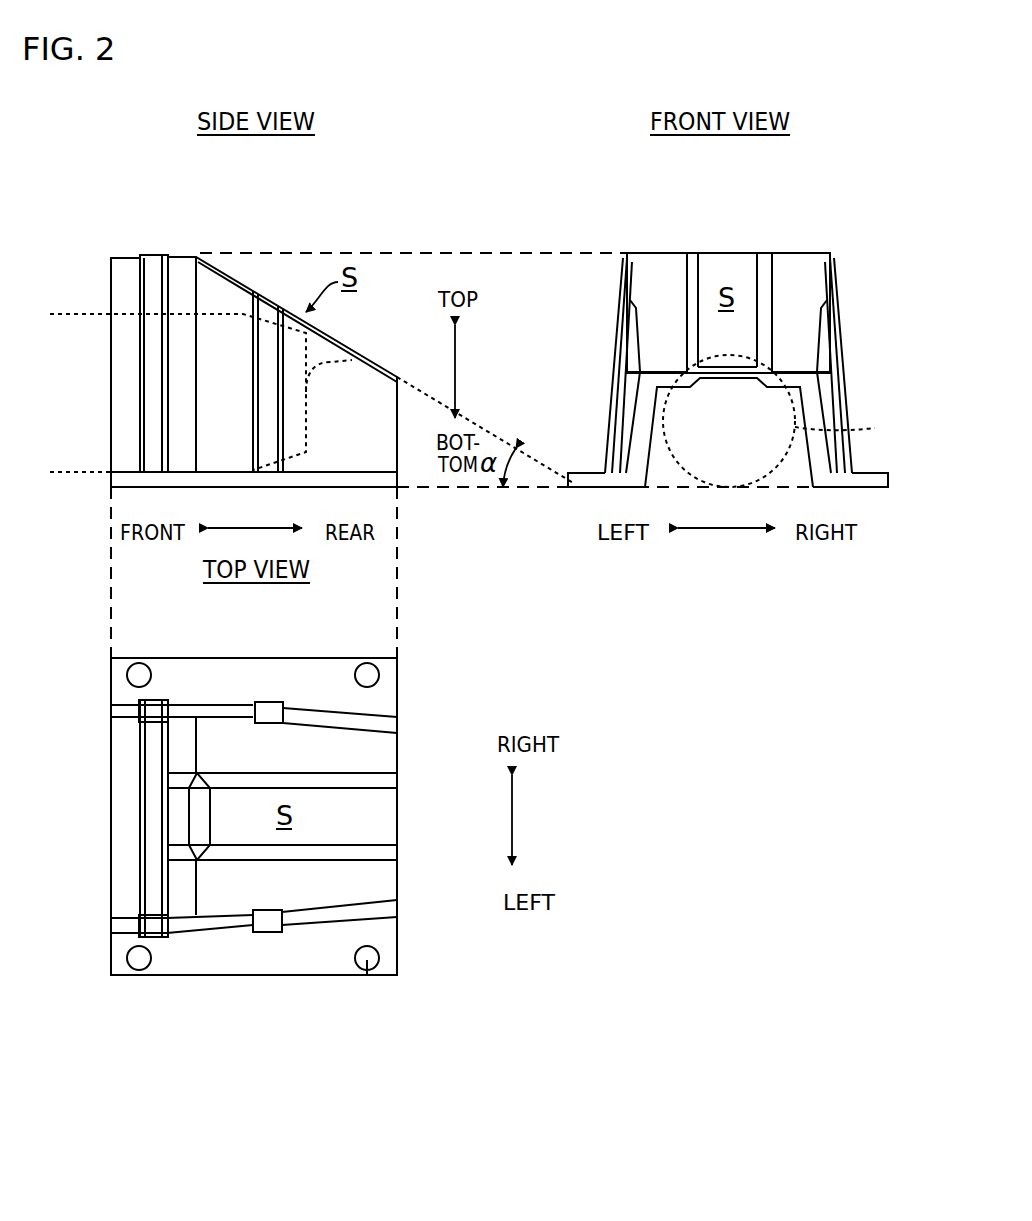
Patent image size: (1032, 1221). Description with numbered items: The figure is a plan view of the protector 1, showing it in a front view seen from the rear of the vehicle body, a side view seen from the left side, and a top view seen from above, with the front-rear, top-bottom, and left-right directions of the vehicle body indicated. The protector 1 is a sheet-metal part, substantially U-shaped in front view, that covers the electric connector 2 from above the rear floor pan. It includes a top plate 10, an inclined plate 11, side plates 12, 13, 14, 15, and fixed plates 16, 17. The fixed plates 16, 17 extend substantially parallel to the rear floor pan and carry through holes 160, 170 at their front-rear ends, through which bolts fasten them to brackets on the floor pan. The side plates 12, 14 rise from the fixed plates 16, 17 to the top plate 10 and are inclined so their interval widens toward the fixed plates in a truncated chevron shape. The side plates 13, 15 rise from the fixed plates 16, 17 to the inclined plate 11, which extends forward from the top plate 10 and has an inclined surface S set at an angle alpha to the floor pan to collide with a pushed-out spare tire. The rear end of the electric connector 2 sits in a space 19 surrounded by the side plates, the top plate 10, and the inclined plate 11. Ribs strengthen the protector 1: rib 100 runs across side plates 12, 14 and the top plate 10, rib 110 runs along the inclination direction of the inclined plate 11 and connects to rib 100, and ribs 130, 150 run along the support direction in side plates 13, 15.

The protector 1 is at (368, 228).
The electric connector 2 is at (357, 353).
The top plate 10 is at (120, 268).
The inclined plate 11 is at (335, 332).
The side plate 12 is at (120, 710).
The side plate 13 is at (832, 402).
The side plate 14 is at (122, 302).
The side plate 15 is at (367, 378).
The fixed plate 16 is at (878, 472).
The fixed plate 17 is at (378, 468).
The space 19 is at (742, 444).
The rib 100 is at (152, 270).
The rib 110 is at (222, 300).
The rib 130 is at (838, 312).
The rib 150 is at (268, 312).
The through hole 160 is at (142, 662).
The through hole 170 is at (140, 980).